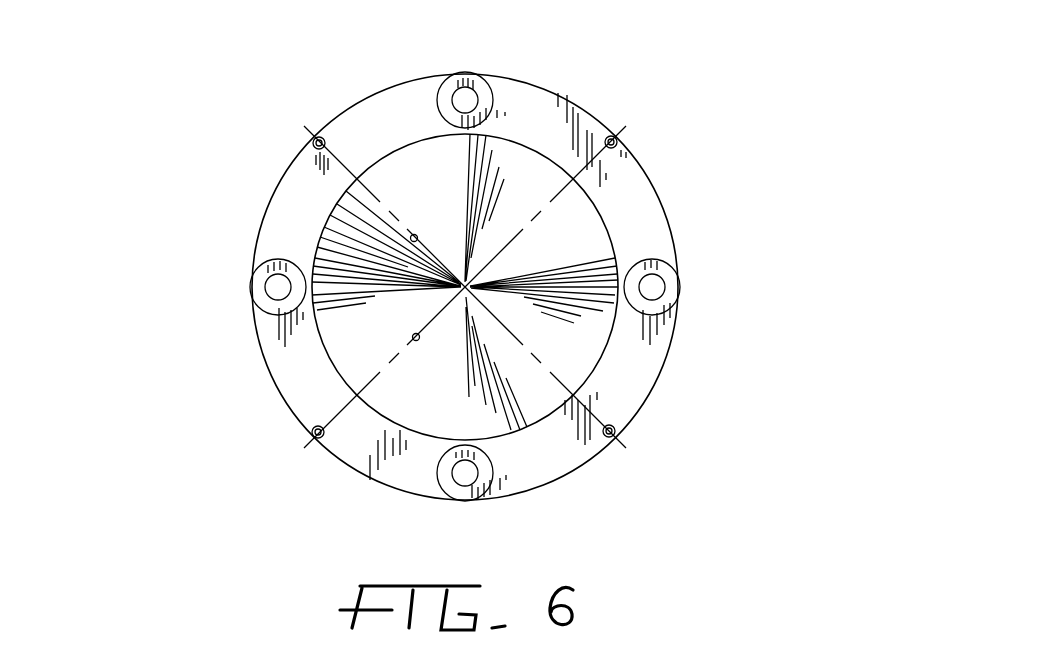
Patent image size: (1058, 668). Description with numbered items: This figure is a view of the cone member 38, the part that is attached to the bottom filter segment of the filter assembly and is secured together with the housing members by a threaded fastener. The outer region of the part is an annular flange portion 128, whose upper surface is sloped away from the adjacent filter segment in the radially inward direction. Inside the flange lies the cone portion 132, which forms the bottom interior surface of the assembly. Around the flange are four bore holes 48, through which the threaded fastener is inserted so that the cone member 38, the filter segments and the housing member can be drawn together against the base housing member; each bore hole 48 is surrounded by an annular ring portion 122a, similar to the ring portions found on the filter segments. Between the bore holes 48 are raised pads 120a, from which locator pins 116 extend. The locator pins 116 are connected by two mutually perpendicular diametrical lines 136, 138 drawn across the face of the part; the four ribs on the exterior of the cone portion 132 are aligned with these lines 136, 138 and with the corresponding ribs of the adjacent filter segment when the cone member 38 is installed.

The cone member 38 is at (355, 478).
The bore holes 48 is at (468, 95).
The locator pins 116 is at (313, 146).
The raised pads 120a is at (318, 132).
The annular ring portions 122a is at (452, 78).
The annular flange portion 128 is at (569, 451).
The cone portion 132 is at (588, 239).
The diametrical line 136 is at (420, 339).
The diametrical line 138 is at (418, 235).